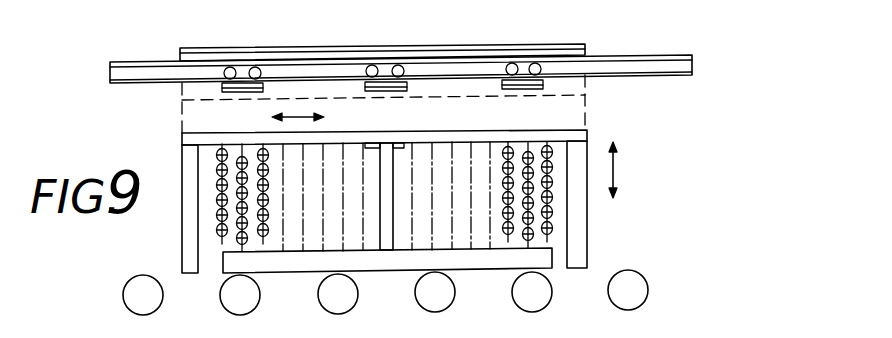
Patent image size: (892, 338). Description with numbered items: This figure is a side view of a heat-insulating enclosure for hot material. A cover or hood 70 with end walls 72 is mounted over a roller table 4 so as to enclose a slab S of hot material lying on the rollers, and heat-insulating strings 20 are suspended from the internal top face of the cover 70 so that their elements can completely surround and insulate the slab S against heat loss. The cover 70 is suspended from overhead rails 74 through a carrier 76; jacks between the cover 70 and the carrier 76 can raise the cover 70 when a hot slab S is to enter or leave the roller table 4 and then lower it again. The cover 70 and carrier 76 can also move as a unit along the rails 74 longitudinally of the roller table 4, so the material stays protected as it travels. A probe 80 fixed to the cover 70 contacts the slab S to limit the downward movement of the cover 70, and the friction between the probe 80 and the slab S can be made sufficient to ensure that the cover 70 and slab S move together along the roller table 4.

The roller table 4 is at (223, 303).
The heat-insulating strings 20 is at (546, 200).
The cover 70 is at (560, 129).
The end walls 72 is at (190, 232).
The overhead rails 74 is at (693, 57).
The carrier 76 is at (274, 47).
The probe 80 is at (381, 246).
The slab S is at (473, 258).